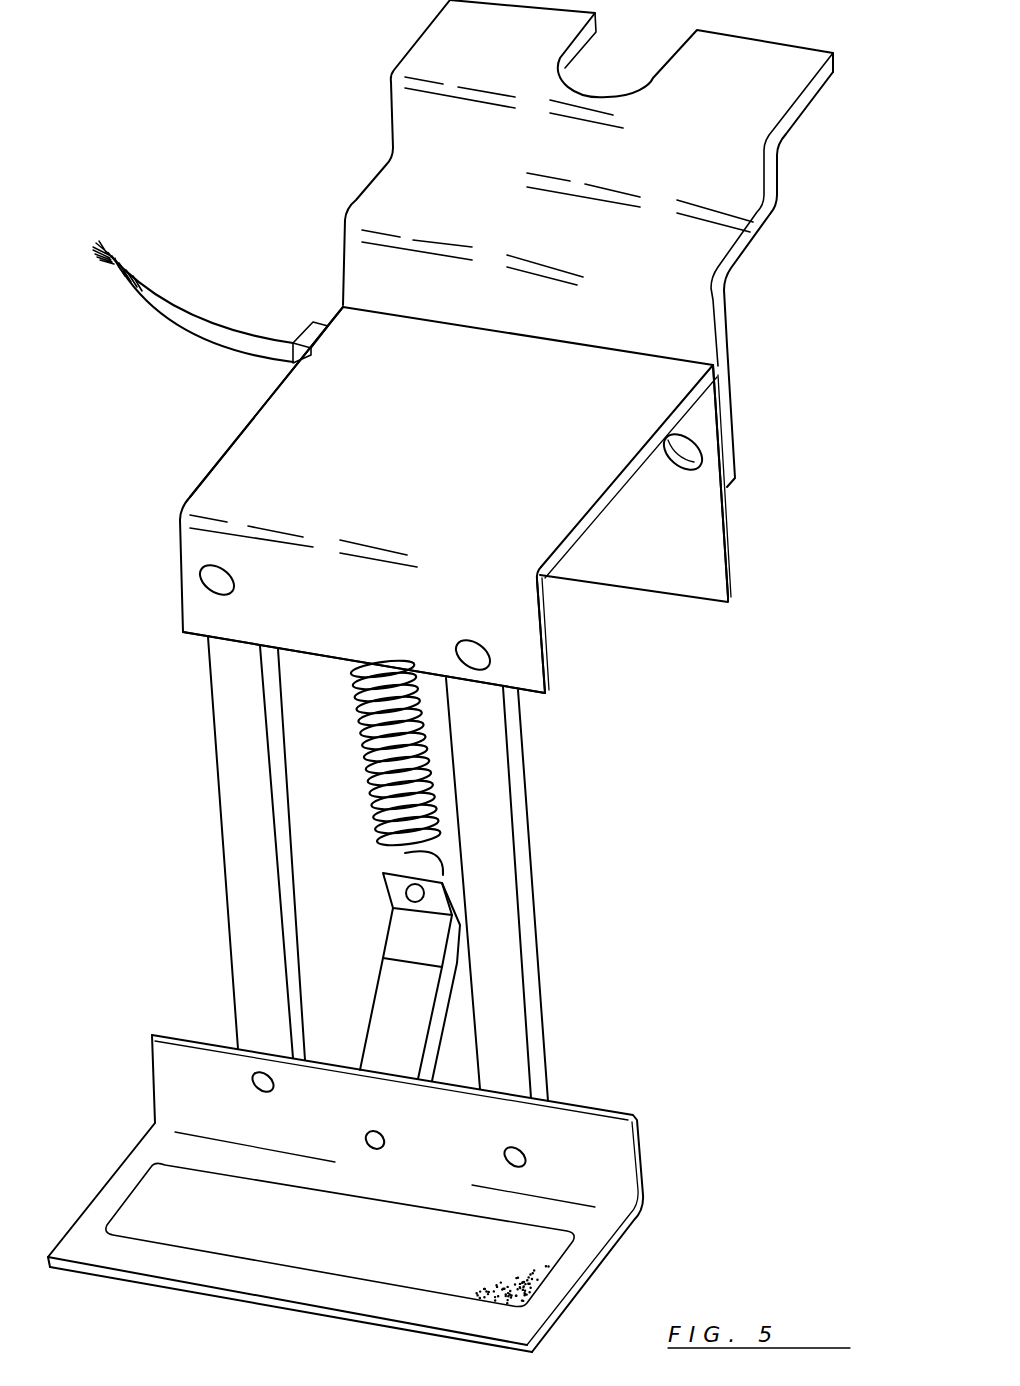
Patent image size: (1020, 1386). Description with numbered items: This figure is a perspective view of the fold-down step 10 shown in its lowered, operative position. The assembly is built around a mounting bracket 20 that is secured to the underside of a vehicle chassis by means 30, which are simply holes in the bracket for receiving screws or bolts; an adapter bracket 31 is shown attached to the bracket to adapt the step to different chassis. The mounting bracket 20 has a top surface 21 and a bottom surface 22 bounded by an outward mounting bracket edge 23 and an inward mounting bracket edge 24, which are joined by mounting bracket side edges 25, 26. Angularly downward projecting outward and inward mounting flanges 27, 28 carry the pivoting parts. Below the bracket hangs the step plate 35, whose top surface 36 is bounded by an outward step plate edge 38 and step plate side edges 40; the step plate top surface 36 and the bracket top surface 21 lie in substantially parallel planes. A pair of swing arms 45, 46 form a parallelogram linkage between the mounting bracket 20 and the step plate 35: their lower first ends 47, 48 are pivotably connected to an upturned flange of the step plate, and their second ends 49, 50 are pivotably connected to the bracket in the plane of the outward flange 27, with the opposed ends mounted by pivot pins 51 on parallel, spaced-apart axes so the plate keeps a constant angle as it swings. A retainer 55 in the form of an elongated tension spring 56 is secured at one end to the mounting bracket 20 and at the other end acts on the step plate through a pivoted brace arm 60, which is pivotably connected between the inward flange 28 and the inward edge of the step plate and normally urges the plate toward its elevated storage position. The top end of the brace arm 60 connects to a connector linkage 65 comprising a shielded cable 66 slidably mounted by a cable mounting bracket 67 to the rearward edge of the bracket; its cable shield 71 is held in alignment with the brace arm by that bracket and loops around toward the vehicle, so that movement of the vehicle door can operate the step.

The fold-down step 10 is at (202, 820).
The mounting bracket 20 is at (609, 340).
The top surface 21 is at (463, 429).
The bottom surface 22 is at (592, 518).
The outward mounting bracket edge 23 is at (530, 580).
The inward mounting bracket edge 24 is at (687, 365).
The mounting bracket side edge 25 is at (223, 457).
The mounting bracket side edge 26 is at (620, 485).
The outward mounting flange 27 is at (550, 680).
The inward mounting flange 28 is at (707, 557).
The means for mounting the bracket 30 is at (690, 463).
The adapter bracket 31 is at (747, 185).
The step plate 35 is at (597, 1282).
The step plate top surface 36 is at (532, 1312).
The outward step plate edge 38 is at (183, 1293).
The step plate side edge 40 is at (90, 1182).
The swing arm 45 is at (500, 793).
The swing arm 46 is at (240, 925).
The lower first end 47 is at (543, 1095).
The lower first end 48 is at (302, 1053).
The second end 49 is at (510, 713).
The second end 50 is at (222, 657).
The pivot pin 51 is at (231, 580).
The retainer 55 is at (367, 810).
The tension spring 56 is at (370, 762).
The brace arm 60 is at (377, 985).
The connector linkage 65 is at (213, 347).
The shielded cable 66 is at (128, 262).
The cable mounting bracket 67 is at (313, 325).
The cable shield 71 is at (188, 318).